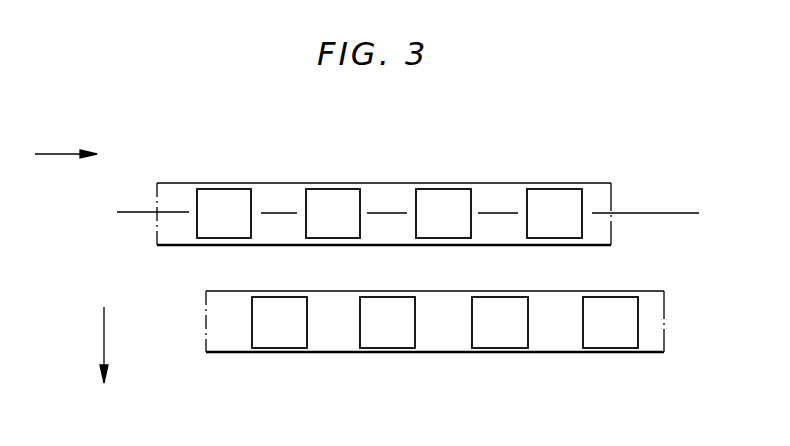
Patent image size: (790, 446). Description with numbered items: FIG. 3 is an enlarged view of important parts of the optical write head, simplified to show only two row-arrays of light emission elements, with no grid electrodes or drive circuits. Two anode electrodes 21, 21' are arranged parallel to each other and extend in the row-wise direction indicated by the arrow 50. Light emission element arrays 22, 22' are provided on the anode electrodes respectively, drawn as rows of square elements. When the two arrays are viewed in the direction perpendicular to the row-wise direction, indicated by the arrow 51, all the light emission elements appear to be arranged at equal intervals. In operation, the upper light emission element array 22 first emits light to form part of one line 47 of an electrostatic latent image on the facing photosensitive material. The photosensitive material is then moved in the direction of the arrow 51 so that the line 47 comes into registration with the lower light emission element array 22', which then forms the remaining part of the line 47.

The anode electrode 21 is at (364, 181).
The light emission element array 22 is at (390, 182).
The line 47 is at (657, 212).
The arrow 50 is at (66, 153).
The arrow 51 is at (103, 343).
The anode electrode 21' is at (433, 348).
The light emission element array 22' is at (442, 353).